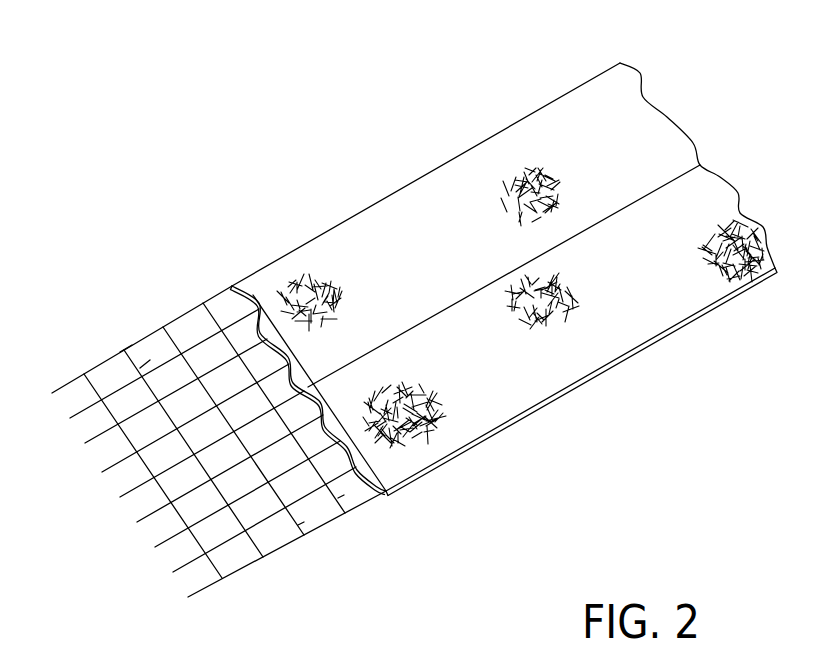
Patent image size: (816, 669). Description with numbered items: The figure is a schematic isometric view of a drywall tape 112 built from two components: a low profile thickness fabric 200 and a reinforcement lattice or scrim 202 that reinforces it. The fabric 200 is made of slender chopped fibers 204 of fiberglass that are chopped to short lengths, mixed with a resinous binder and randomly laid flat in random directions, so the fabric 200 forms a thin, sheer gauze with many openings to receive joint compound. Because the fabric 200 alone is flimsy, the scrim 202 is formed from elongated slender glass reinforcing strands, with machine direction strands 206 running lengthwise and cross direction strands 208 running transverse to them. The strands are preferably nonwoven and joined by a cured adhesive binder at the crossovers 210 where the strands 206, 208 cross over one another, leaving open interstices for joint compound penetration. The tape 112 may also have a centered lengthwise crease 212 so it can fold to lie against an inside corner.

The drywall tape 112 is at (552, 116).
The fabric 200 is at (416, 254).
The reinforcement lattice 202 is at (238, 440).
The chopped fibers 204 is at (436, 421).
The machine direction strands 206 is at (78, 386).
The cross direction strands 208 is at (185, 316).
The crossovers 210 is at (122, 358).
The lengthwise crease 212 is at (605, 219).